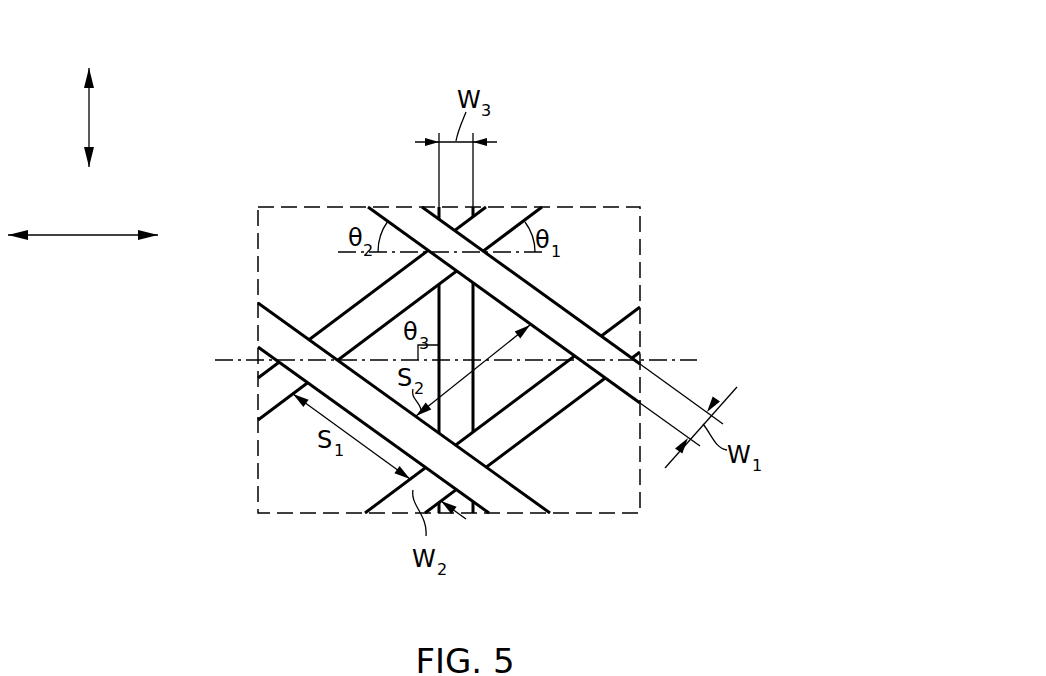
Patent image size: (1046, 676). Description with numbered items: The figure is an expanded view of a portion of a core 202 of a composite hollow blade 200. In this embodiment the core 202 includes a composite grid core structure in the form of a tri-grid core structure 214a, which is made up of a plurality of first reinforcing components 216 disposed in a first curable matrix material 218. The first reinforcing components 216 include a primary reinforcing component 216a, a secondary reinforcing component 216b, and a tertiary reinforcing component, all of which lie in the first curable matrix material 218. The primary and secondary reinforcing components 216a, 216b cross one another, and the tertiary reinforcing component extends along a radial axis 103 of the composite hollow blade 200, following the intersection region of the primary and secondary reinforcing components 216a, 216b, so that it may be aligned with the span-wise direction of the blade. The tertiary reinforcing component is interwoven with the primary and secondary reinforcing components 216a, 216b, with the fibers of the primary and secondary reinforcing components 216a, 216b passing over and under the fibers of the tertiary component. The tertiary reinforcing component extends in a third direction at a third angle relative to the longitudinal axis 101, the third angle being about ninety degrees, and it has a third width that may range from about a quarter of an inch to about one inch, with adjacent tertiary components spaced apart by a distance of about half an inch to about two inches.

The composite hollow blade 200 is at (684, 66).
The longitudinal axis 101 is at (111, 235).
The radial axis 103 is at (89, 118).
The core 202 is at (286, 480).
The tri-grid core structure 214a is at (614, 244).
The first reinforcing components 216 is at (450, 312).
The primary reinforcing component 216a is at (481, 206).
The secondary reinforcing component 216b is at (434, 206).
The first curable matrix material 218 is at (510, 421).